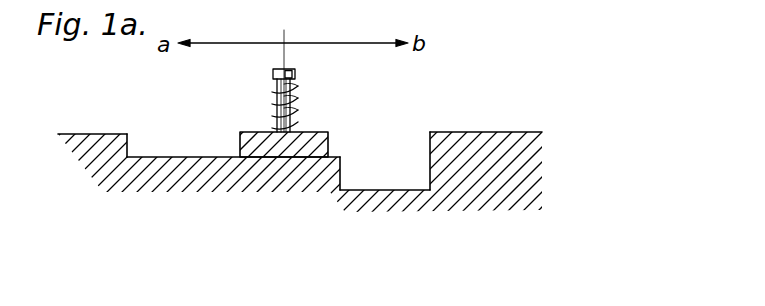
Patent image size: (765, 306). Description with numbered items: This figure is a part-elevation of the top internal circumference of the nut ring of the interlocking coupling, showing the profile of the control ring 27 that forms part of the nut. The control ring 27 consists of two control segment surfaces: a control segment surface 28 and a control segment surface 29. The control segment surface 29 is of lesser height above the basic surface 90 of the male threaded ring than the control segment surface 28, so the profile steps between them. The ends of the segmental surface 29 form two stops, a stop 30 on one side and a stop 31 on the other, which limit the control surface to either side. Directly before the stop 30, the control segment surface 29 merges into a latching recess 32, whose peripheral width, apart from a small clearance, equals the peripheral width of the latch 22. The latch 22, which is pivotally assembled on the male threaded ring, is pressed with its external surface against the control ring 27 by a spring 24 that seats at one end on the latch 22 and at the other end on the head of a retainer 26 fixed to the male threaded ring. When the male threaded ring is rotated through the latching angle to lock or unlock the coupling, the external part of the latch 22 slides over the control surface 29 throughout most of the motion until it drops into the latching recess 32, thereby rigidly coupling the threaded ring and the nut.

The latch 22 is at (285, 142).
The spring 24 is at (292, 121).
The retainer 26 is at (280, 105).
The control ring 27 is at (327, 170).
The control segment surface 28 is at (497, 132).
The control segment surface 29 is at (97, 134).
The stop 30 is at (428, 150).
The stop 31 is at (128, 146).
The latching recess 32 is at (372, 183).
The basic surface 90 is at (385, 192).